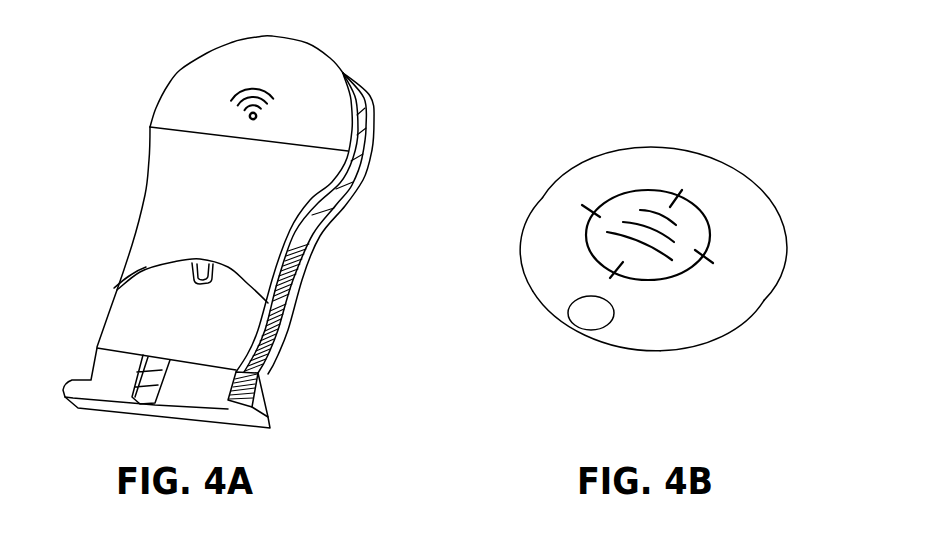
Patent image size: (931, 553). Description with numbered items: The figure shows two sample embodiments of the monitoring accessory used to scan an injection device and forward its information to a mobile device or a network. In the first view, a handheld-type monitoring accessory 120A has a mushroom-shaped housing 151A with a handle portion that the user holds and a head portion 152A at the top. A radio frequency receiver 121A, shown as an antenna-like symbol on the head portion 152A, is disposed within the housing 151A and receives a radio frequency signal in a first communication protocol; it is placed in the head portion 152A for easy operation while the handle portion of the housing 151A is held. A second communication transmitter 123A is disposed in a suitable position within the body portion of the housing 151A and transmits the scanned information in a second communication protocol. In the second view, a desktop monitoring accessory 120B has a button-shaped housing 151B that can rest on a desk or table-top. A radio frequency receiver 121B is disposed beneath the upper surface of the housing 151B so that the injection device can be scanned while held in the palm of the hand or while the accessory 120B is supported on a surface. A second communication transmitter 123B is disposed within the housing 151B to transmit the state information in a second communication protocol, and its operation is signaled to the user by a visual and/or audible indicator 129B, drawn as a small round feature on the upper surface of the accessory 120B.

In FIG. 4A, the handheld-type monitoring accessory 120A is at (372, 114).
In FIG. 4A, the radio frequency receiver 121A is at (242, 107).
In FIG. 4A, the second communication transmitter 123A is at (140, 258).
In FIG. 4A, the mushroom-shaped housing 151A is at (168, 173).
In FIG. 4A, the head portion 152A is at (167, 108).
In FIG. 4B, the desktop monitoring accessory 120B is at (712, 186).
In FIG. 4B, the radio frequency receiver 121B is at (600, 203).
In FIG. 4B, the second communication transmitter 123B is at (702, 317).
In FIG. 4B, the visual and/or audible indicator 129B is at (582, 318).
In FIG. 4B, the button-shaped housing 151B is at (542, 258).